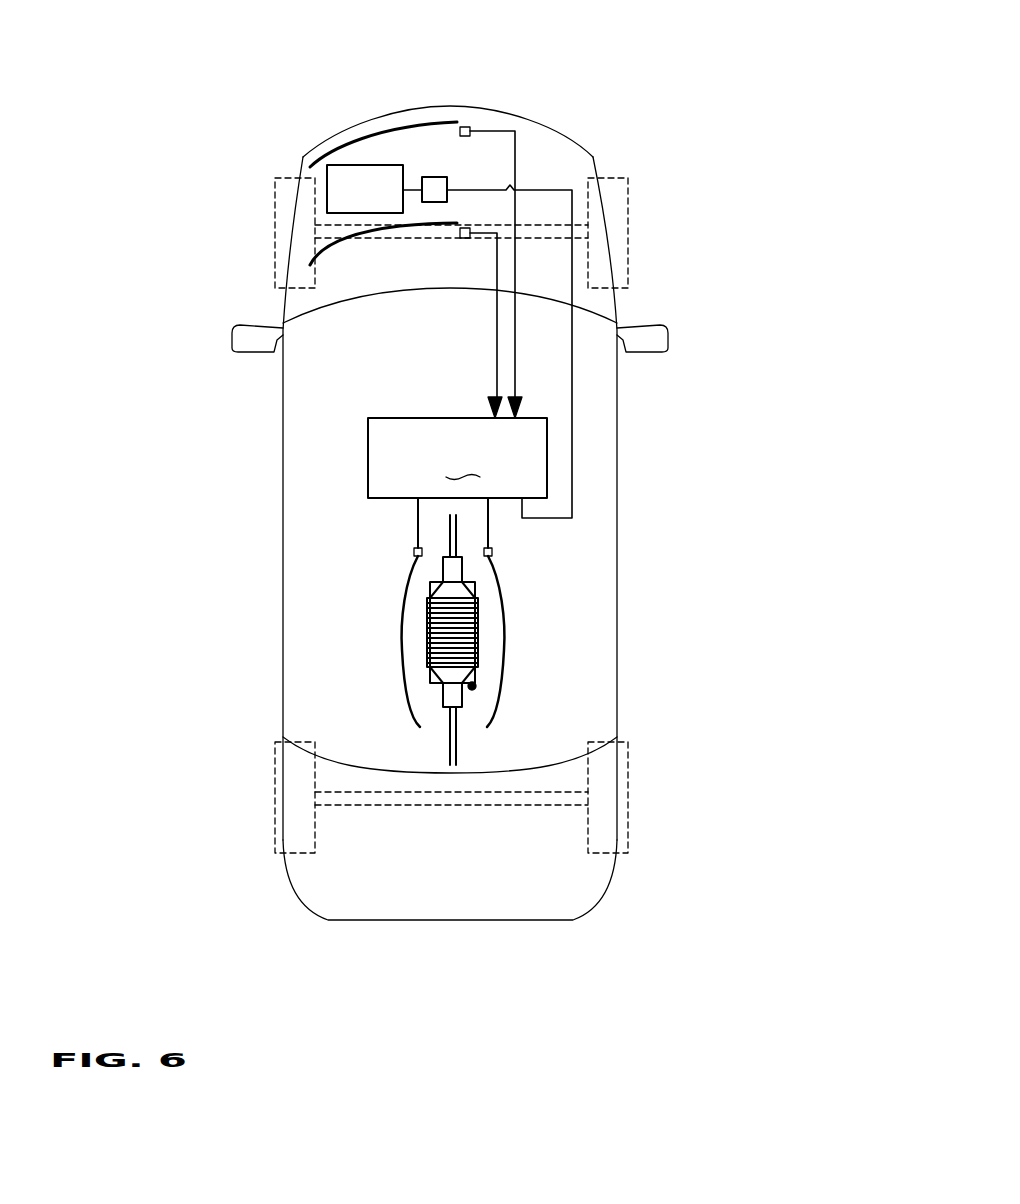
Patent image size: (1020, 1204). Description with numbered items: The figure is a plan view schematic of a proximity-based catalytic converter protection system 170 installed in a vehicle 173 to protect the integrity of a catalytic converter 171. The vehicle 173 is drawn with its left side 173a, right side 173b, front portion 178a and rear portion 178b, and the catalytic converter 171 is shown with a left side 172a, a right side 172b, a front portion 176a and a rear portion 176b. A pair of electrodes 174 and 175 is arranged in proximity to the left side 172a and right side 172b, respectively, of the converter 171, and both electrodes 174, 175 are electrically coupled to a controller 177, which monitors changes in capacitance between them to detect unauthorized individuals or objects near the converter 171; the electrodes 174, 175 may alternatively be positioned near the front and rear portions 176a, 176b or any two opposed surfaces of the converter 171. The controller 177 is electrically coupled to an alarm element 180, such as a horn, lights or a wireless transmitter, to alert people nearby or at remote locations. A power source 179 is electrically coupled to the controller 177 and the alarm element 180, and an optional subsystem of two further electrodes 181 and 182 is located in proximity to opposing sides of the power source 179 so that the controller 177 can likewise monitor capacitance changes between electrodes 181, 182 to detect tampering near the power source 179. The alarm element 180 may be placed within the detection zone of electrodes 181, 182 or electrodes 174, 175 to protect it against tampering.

The proximity-based catalytic converter protection system 170 is at (760, 307).
The catalytic converter 171 is at (472, 688).
The left side 172a is at (427, 638).
The right side 172b is at (478, 645).
The vehicle 173 is at (610, 235).
The left side 173a is at (283, 371).
The right side 173b is at (617, 393).
The electrode 174 is at (402, 606).
The electrode 175 is at (507, 610).
The front portion 176a is at (440, 572).
The rear portion 176b is at (438, 702).
The controller 177 is at (457, 476).
The front portion 178a is at (502, 113).
The rear portion 178b is at (502, 932).
The power source 179 is at (327, 192).
The alarm element 180 is at (437, 188).
The electrode 181 is at (358, 138).
The electrode 182 is at (330, 237).